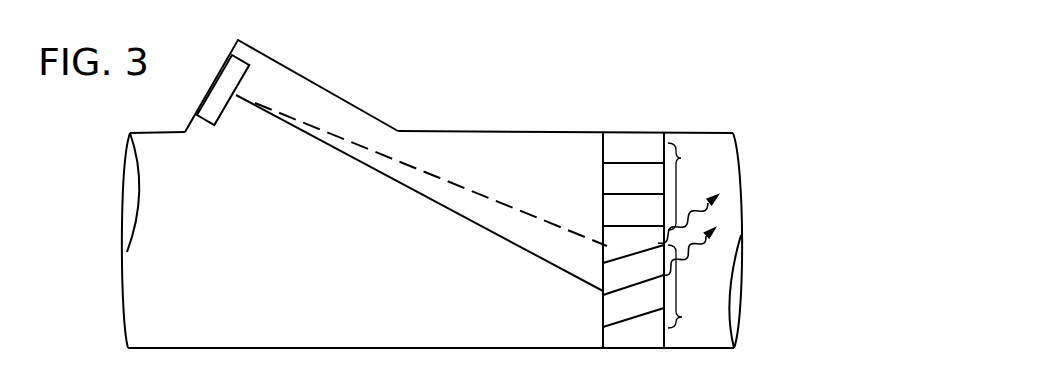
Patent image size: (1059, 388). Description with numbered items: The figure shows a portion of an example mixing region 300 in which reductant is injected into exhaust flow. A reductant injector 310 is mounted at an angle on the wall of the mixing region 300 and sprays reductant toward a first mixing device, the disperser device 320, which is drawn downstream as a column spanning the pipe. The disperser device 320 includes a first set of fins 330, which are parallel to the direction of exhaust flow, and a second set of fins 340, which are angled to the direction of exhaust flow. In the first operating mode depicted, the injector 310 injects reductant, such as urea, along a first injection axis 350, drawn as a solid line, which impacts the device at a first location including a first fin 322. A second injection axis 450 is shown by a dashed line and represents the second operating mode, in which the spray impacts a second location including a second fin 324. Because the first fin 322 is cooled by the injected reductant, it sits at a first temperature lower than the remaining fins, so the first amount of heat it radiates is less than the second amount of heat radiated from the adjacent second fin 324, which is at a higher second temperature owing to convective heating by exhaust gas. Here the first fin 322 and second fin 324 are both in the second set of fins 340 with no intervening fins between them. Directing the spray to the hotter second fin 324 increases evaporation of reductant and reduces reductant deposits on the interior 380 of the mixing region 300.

The mixing region 300 is at (720, 77).
The reductant injector 310 is at (200, 106).
The disperser device 320 is at (600, 177).
The first fin 322 is at (603, 295).
The second fin 324 is at (612, 259).
The first set of fins 330 is at (690, 186).
The second set of fins 340 is at (690, 286).
The first injection axis 350 is at (530, 252).
The interior of mixing region 380 is at (492, 347).
The second injection axis 450 is at (495, 199).